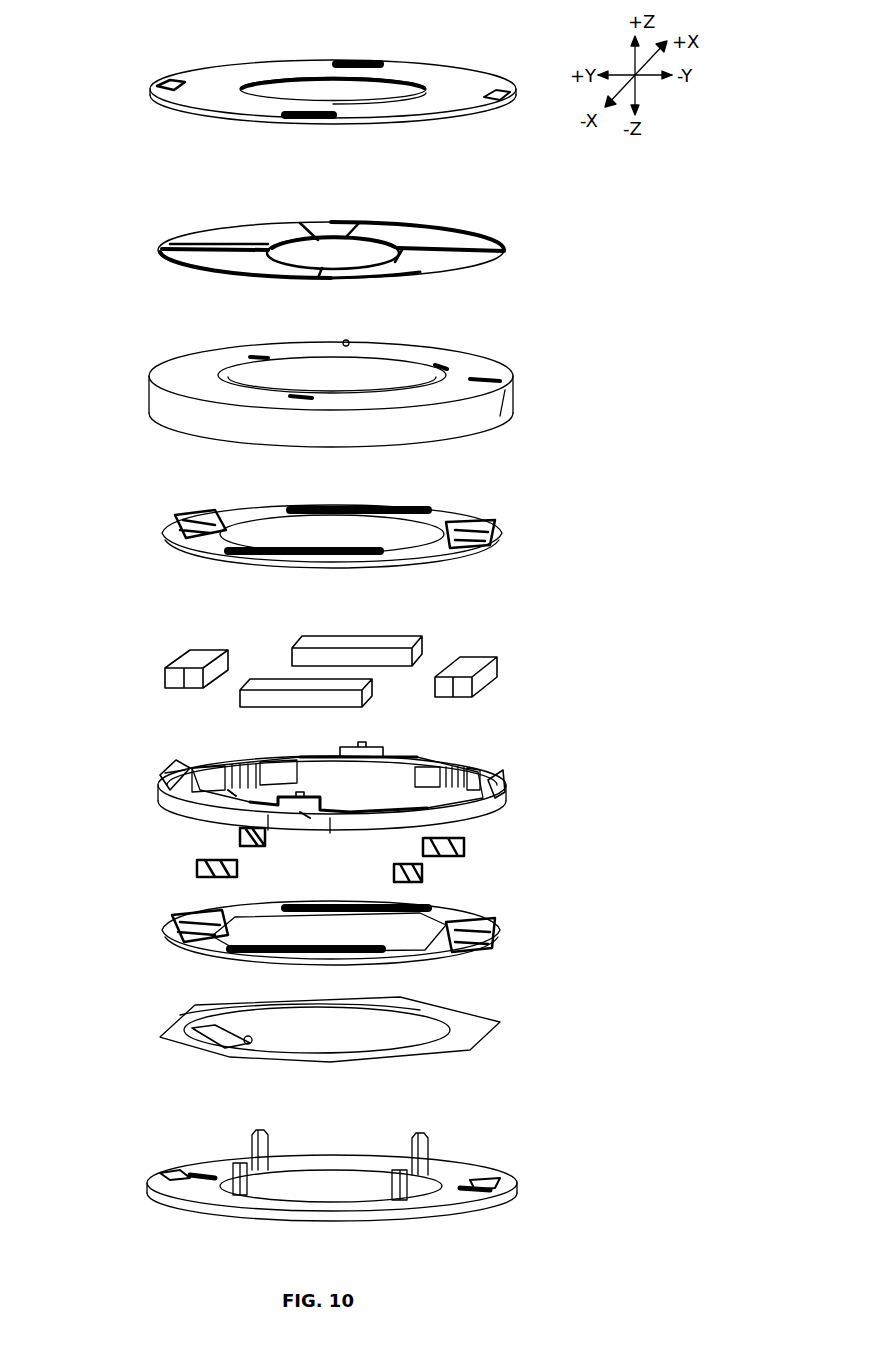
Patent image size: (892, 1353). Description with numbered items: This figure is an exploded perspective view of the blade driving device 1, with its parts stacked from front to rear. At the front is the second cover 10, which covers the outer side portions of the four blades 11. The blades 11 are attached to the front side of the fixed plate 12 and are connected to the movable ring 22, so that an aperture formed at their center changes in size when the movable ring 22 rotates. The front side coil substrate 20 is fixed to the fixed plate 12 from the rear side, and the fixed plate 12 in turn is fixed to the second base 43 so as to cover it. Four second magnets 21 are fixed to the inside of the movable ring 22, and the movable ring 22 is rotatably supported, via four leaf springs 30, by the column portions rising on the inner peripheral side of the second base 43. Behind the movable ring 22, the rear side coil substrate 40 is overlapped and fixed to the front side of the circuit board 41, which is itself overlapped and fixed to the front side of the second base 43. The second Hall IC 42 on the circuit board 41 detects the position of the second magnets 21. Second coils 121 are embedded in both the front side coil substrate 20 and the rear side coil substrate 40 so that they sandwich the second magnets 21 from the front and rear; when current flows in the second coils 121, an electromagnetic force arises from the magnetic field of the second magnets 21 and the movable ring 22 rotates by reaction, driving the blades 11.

The blade driving device 1 is at (112, 62).
The second cover 10 is at (225, 65).
The blades 11 is at (257, 232).
The fixed plate 12 is at (220, 350).
The front side coil substrate 20 is at (240, 505).
The second coils 121 is at (368, 505).
The second magnets 21 is at (355, 637).
The movable ring 22 is at (235, 760).
The leaf springs 30 is at (238, 832).
The rear side coil substrate 40 is at (198, 957).
The circuit board 41 is at (197, 1050).
The second Hall IC 42 is at (235, 1032).
The second base 43 is at (222, 1160).